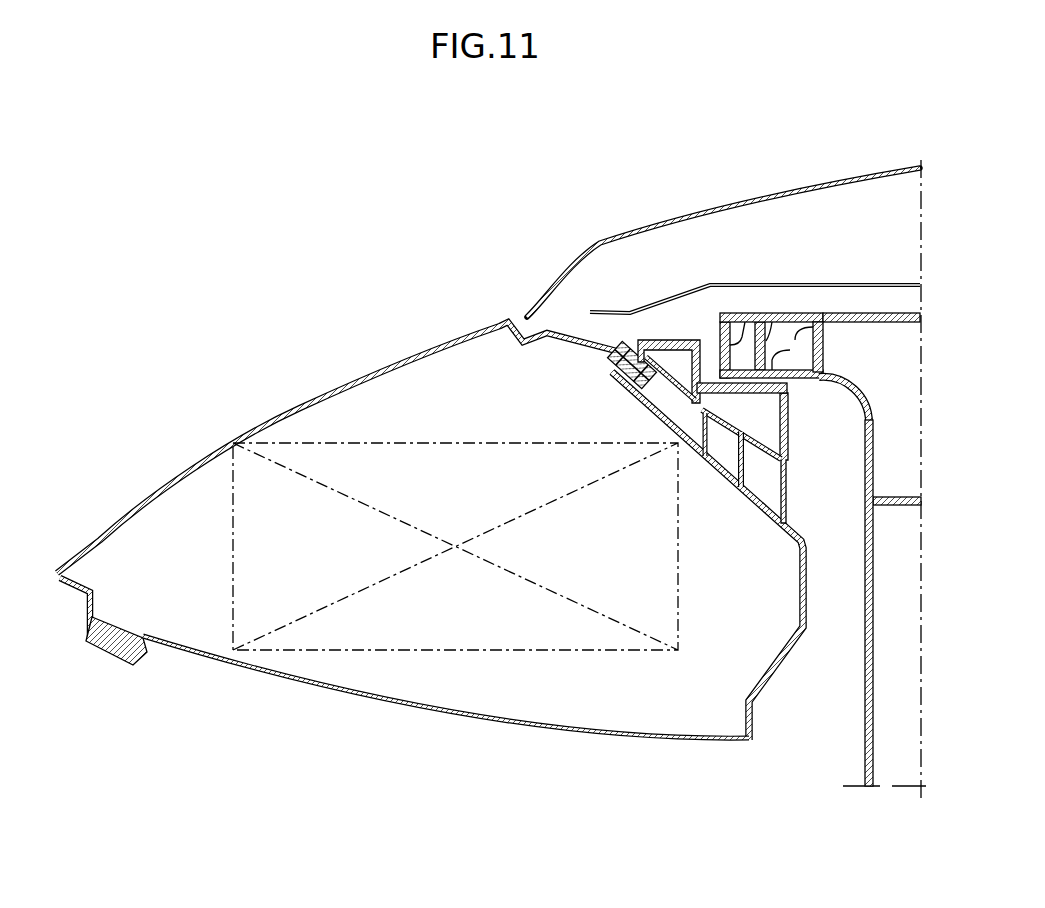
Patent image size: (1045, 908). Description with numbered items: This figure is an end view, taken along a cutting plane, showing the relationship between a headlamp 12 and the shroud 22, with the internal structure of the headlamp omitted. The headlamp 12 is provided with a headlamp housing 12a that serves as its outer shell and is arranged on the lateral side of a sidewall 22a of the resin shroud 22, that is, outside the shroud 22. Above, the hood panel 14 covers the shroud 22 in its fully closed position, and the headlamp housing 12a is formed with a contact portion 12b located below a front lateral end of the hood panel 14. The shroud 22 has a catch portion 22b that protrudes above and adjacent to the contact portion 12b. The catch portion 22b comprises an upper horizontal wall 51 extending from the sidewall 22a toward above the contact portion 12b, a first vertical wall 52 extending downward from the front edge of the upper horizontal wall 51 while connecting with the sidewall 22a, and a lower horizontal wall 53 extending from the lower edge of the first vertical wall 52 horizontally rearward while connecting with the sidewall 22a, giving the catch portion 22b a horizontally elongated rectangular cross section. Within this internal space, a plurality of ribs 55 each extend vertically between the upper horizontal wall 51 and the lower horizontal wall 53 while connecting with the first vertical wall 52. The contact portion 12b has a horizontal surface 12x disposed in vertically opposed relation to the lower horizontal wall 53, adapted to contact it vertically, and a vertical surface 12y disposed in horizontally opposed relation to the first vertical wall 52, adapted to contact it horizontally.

The headlamp 12 is at (288, 407).
The headlamp housing 12a is at (487, 720).
The contact portion 12b is at (670, 333).
The horizontal surface 12x is at (793, 386).
The vertical surface 12y is at (700, 337).
The hood panel 14 is at (697, 210).
The shroud 22 is at (862, 747).
The sidewall 22a is at (863, 688).
The catch portion 22b is at (817, 310).
The upper horizontal wall 51 is at (885, 312).
The first vertical wall 52 is at (745, 322).
The lower horizontal wall 53 is at (815, 350).
The ribs 55 is at (800, 318).